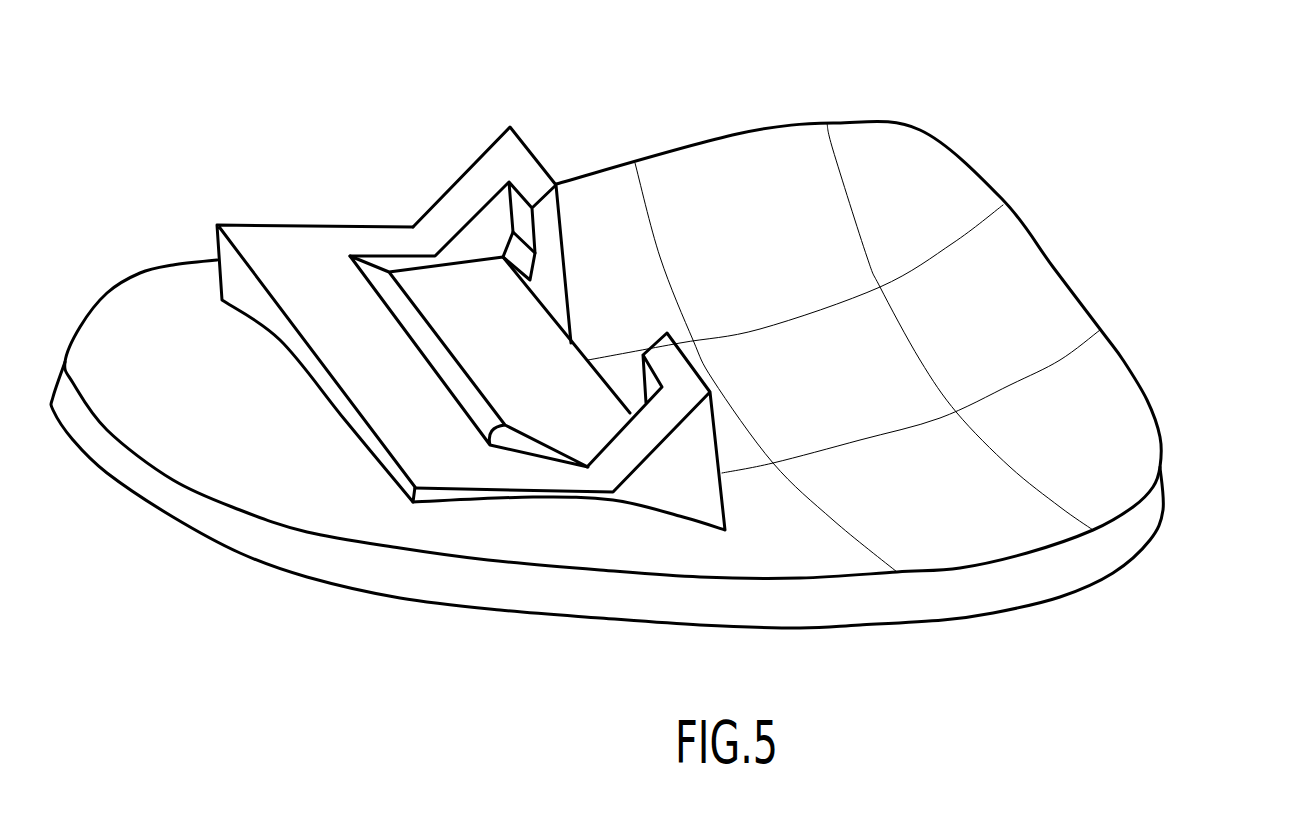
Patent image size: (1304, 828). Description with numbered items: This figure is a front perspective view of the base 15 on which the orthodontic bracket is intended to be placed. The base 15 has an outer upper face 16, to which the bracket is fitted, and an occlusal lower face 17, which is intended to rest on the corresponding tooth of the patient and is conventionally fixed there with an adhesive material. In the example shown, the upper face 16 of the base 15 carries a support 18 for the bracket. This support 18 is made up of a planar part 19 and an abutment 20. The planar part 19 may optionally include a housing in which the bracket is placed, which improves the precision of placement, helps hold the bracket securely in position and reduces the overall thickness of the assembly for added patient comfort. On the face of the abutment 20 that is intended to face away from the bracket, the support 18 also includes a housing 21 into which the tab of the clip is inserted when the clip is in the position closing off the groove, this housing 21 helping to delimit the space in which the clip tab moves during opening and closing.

The base 15 is at (1154, 357).
The outer (upper) face 16 is at (804, 167).
The occlusal (lower) face 17 is at (943, 619).
The support 18 is at (235, 273).
The planar part 19 is at (367, 317).
The abutment 20 is at (468, 197).
The housing 21 is at (548, 273).